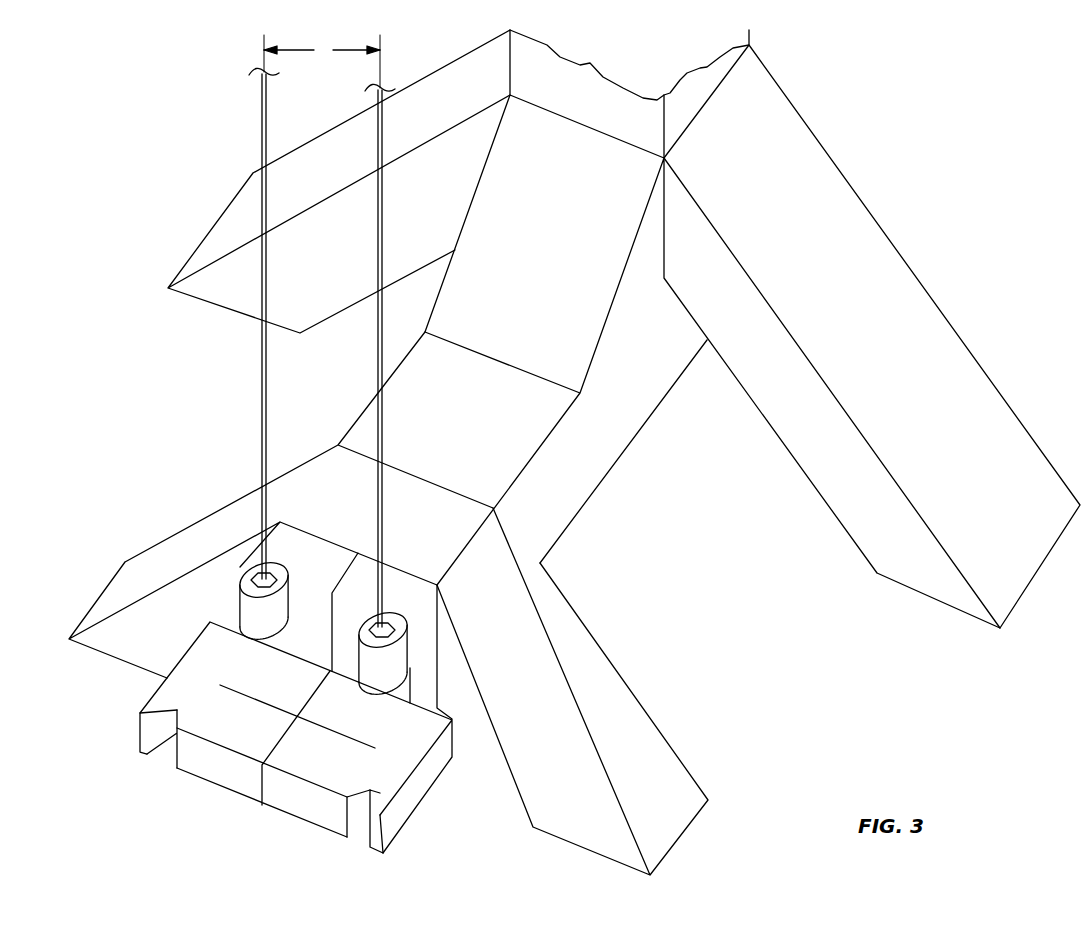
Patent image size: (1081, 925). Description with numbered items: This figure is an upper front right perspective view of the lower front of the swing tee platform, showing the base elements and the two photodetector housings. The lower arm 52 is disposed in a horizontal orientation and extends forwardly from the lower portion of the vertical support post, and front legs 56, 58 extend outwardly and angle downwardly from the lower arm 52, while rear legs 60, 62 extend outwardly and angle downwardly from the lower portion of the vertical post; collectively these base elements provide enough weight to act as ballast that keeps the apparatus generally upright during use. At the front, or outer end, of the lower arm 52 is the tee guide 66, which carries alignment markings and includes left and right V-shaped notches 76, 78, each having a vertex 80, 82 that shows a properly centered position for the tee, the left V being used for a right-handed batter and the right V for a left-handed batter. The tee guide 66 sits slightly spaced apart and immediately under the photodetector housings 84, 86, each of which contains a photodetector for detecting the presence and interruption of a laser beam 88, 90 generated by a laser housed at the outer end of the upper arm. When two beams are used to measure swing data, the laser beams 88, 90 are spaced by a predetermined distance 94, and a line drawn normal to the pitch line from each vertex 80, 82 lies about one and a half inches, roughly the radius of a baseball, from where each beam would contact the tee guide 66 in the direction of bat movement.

The lower arm 52 is at (615, 450).
The front leg 56 is at (113, 588).
The front leg 58 is at (660, 752).
The rear leg 60 is at (185, 278).
The rear leg 62 is at (988, 407).
The tee guide 66 is at (415, 791).
The left V-shaped notch 76 is at (158, 744).
The right V-shaped notch 78 is at (360, 823).
The vertex 80 is at (158, 702).
The vertex 82 is at (366, 832).
The photodetector housing 84 is at (248, 608).
The photodetector housing 86 is at (387, 668).
The laser beam 88 is at (258, 372).
The laser beam 90 is at (385, 313).
The predetermined distance 94 is at (313, 68).